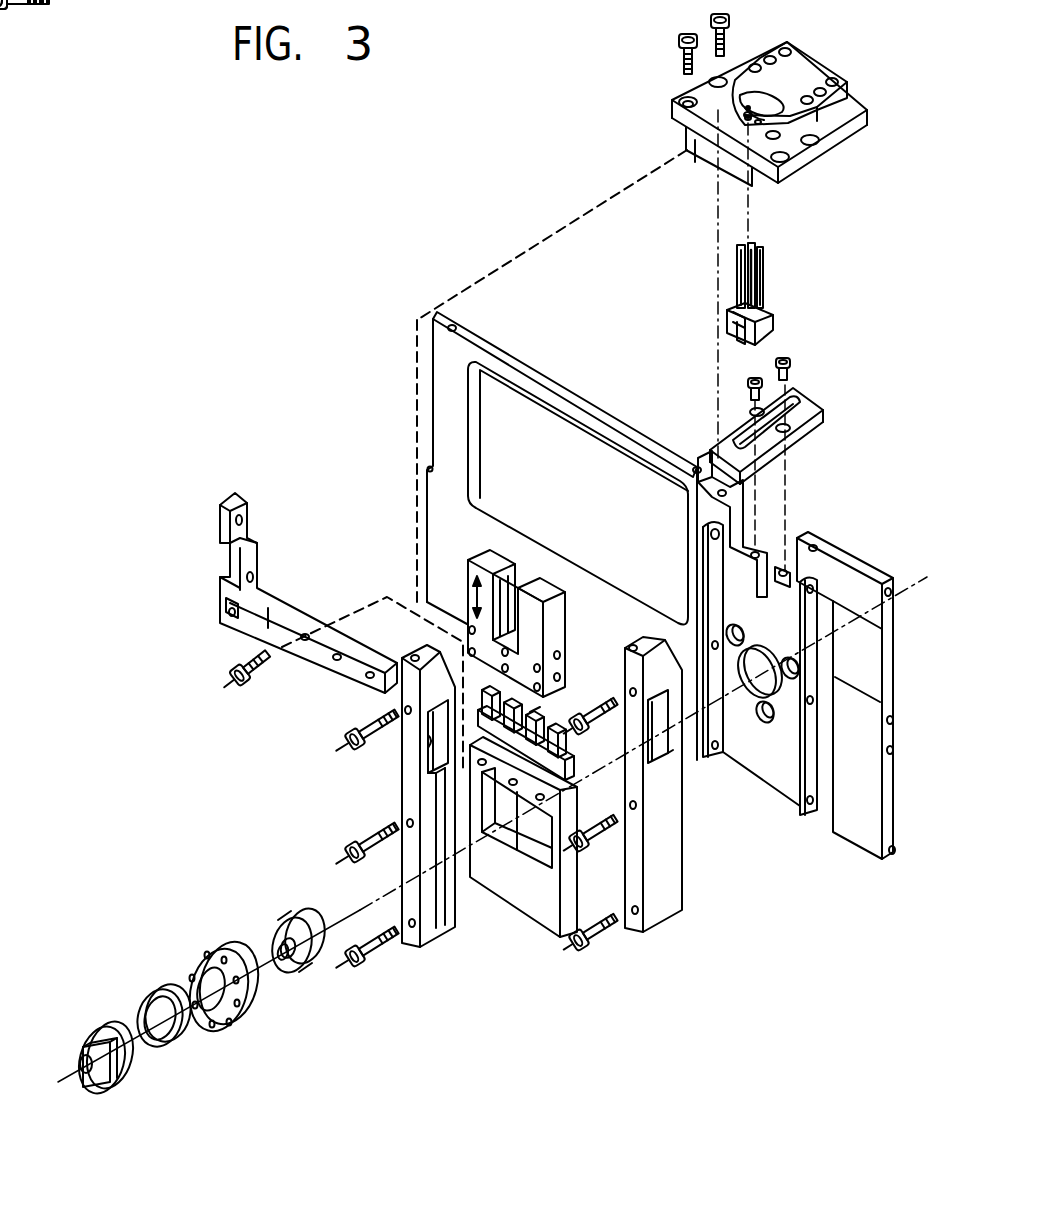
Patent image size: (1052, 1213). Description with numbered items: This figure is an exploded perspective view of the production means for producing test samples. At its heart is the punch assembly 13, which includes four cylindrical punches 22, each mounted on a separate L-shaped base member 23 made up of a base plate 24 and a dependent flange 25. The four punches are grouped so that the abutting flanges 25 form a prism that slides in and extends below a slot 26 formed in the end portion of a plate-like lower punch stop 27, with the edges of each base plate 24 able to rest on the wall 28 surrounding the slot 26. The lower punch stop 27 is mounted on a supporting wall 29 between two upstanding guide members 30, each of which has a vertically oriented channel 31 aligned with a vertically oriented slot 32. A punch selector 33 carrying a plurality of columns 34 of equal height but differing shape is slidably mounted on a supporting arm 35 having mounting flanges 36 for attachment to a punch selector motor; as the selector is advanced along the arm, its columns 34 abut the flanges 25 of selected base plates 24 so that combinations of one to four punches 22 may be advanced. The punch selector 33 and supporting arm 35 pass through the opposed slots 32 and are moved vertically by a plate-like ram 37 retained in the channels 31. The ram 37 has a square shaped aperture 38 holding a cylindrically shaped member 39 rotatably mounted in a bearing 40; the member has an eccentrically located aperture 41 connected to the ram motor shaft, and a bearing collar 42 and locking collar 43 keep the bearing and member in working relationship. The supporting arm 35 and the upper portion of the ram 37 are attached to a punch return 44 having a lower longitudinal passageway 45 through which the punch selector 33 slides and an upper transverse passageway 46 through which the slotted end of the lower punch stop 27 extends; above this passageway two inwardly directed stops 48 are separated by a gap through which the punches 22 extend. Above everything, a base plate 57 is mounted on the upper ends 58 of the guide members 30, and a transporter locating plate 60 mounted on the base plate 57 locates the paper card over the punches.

The punch assembly 13 is at (759, 295).
The punches 22 is at (765, 250).
The L shaped base member 23 is at (775, 306).
The base plate 24 is at (727, 312).
The dependent flange 25 is at (727, 333).
The slot 26 is at (735, 436).
The lower punch stop 27 is at (779, 425).
The wall 28 is at (765, 453).
The supporting wall 29 is at (866, 706).
The guide members 30 is at (543, 820).
The channel 31 is at (446, 930).
The slot 32 is at (428, 745).
The punch selector 33 is at (495, 695).
The columns 34 is at (532, 712).
The supporting arm 35 is at (318, 652).
The mounting flanges 36 is at (292, 587).
The ram 37 is at (543, 858).
The square shaped aperture 38 is at (545, 845).
The cylindrically shaped member 39 is at (304, 975).
The bearing 40 is at (236, 1028).
The eccentrically located aperture 41 is at (280, 940).
The bearing collar 42 is at (163, 1050).
The locking collar 43 is at (112, 1092).
The punch return 44 is at (468, 591).
The lower longitudinal passageway 45 is at (556, 668).
The transverse passageway 46 is at (507, 565).
The stops 48 is at (480, 556).
The base plate 57 is at (843, 122).
The upper ends 58 is at (648, 632).
The transporter locating plate 60 is at (812, 70).